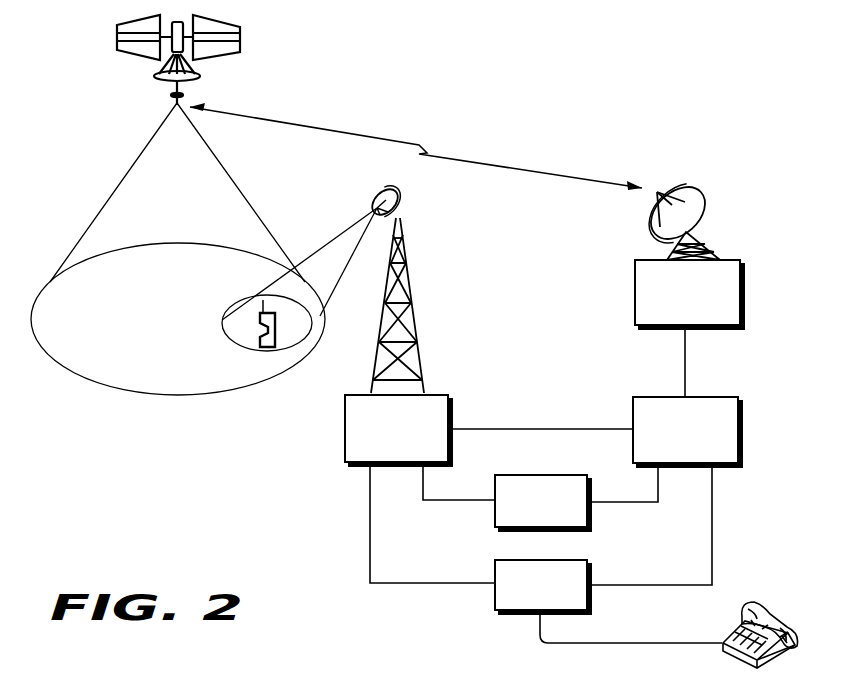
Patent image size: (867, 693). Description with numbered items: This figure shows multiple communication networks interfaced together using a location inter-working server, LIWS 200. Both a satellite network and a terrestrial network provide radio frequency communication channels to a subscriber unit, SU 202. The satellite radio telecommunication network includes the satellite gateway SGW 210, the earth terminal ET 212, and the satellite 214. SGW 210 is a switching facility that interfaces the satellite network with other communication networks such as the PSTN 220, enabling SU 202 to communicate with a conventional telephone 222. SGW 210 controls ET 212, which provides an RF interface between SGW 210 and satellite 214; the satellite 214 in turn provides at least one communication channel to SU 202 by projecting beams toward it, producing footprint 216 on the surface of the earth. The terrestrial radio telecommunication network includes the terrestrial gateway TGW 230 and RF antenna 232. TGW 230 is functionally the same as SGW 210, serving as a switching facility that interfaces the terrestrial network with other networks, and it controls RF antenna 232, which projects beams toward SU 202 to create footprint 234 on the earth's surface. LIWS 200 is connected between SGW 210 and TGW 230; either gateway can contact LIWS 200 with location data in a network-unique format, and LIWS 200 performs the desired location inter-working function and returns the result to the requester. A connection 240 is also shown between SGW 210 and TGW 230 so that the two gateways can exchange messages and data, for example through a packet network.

The satellite 214 is at (116, 33).
The footprint 216 is at (90, 383).
The footprint 234 is at (222, 318).
The SU 202 is at (259, 338).
The RF antenna 232 is at (405, 241).
The terrestrial gateway 230 is at (345, 428).
The connection 240 is at (543, 426).
The earth terminal 212 is at (635, 292).
The satellite gateway 210 is at (740, 433).
The location inter-working server 200 is at (590, 524).
The PSTN 220 is at (495, 602).
The conventional telephone 222 is at (768, 612).